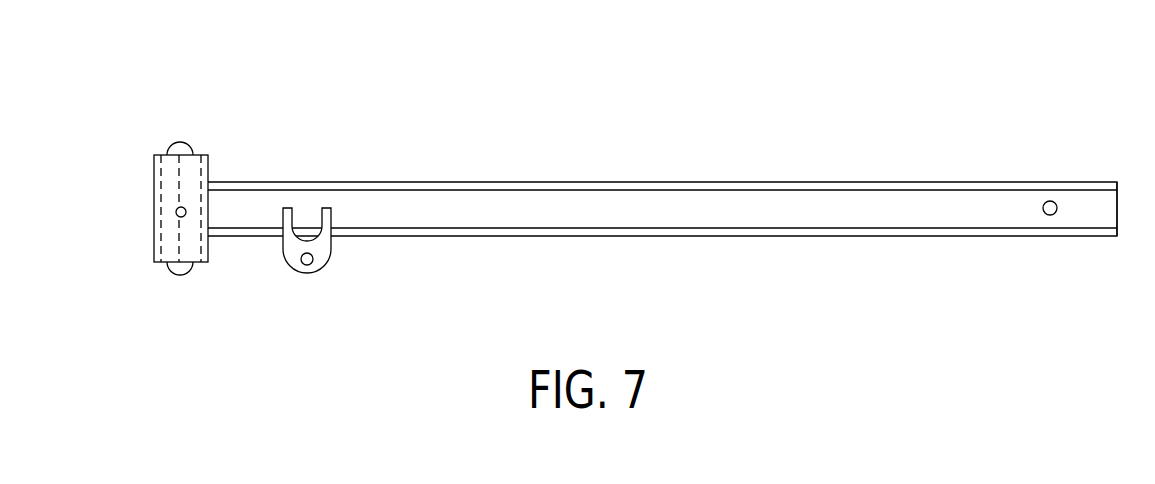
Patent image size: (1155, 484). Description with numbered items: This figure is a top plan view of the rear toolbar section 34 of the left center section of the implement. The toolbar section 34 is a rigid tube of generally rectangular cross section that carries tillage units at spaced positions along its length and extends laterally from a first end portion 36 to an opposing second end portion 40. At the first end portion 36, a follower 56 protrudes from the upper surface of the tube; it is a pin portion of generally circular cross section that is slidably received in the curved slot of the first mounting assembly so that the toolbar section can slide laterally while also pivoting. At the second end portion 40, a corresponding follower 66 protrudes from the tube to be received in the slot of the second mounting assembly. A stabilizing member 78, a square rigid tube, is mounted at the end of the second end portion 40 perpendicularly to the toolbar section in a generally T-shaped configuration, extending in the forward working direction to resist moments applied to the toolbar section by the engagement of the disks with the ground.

The toolbar section 34 is at (633, 86).
The first end portion 36 is at (1052, 278).
The second end portion 40 is at (276, 85).
The followers 56 is at (1056, 201).
The followers 66 is at (176, 211).
The stabilizing member 78 is at (153, 165).